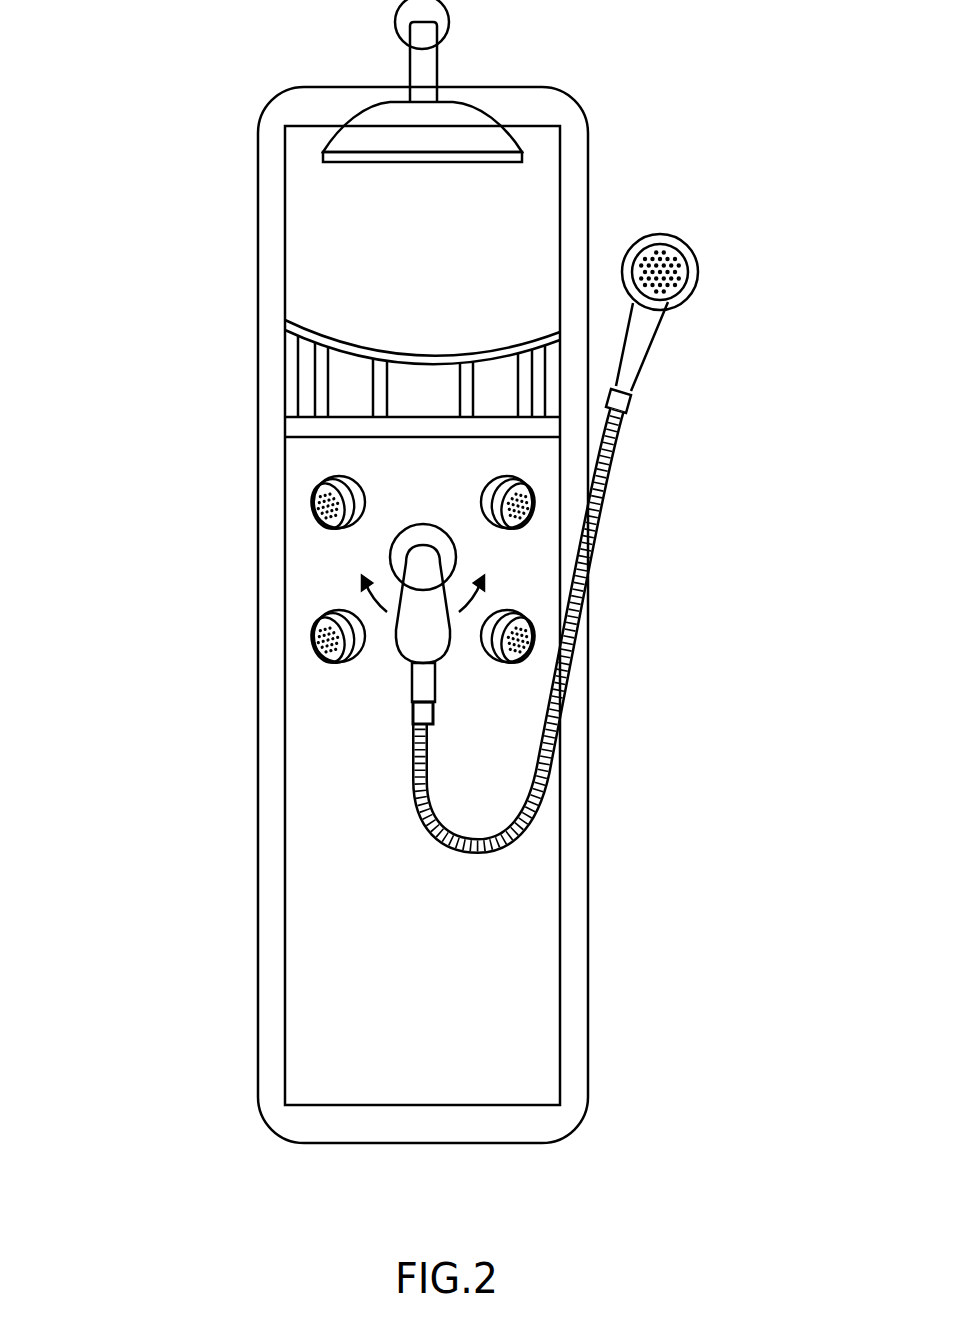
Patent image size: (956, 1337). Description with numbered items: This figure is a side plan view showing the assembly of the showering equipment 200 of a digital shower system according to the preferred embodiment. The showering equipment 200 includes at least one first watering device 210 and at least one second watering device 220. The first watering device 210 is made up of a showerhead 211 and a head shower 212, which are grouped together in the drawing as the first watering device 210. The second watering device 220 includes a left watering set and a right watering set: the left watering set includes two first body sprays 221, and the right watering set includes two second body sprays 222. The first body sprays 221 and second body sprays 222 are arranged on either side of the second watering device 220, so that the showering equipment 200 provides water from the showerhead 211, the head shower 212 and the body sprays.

The showering equipment 200 is at (238, 827).
The first watering device 210 is at (575, 81).
The showerhead 211 is at (473, 133).
The head shower 212 is at (652, 258).
The second watering device 220 is at (325, 663).
The first body spray 221 is at (318, 506).
The second body spray 222 is at (530, 510).